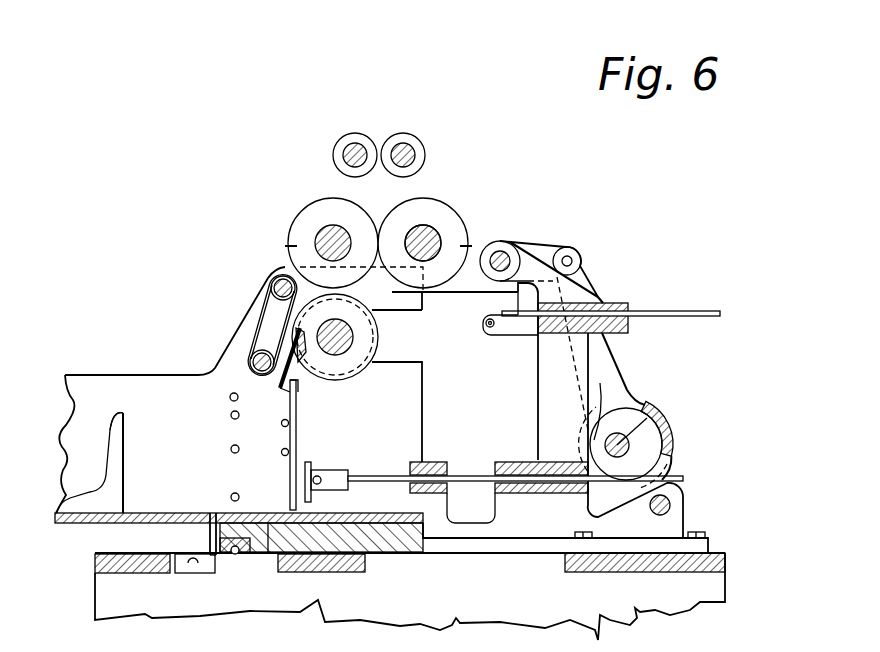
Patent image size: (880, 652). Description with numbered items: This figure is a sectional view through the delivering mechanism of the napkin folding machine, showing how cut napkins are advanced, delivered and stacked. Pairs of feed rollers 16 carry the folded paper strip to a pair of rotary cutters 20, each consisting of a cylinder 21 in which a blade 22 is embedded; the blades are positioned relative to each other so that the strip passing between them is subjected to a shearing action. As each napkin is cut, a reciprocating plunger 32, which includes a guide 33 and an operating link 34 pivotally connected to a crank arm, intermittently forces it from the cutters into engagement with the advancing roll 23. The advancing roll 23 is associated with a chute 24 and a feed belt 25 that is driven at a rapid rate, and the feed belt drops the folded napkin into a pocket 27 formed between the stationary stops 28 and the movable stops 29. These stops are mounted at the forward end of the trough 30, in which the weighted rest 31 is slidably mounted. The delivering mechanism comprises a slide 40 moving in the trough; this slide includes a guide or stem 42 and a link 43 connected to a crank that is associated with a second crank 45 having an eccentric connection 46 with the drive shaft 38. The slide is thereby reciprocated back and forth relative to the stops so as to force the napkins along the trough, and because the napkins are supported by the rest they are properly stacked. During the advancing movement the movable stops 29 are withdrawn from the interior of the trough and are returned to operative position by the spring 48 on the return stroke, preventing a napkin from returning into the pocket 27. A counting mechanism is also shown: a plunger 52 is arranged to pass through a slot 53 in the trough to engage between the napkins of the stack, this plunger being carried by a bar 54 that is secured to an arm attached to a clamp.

The feed rollers 16 is at (352, 150).
The rotary cutters 20 is at (320, 232).
The cylinder 21 is at (443, 223).
The blade 22 is at (478, 242).
The advancing roll 23 is at (368, 338).
The chute 24 is at (298, 392).
The feed belt 25 is at (254, 316).
The pocket 27 is at (281, 452).
The stationary stops 28 is at (300, 456).
The movable stops 29 is at (231, 494).
The trough 30 is at (100, 385).
The weighted rest 31 is at (98, 503).
The plunger 32 is at (463, 295).
The guide 33 is at (680, 312).
The operating link 34 is at (508, 337).
The drive shaft 38 is at (632, 440).
The slide 40 is at (273, 560).
The stem 42 is at (462, 476).
The link 43 is at (340, 476).
The second crank 45 is at (546, 244).
The eccentric connection 46 is at (608, 372).
The spring 48 is at (262, 560).
The plunger 52 is at (213, 556).
The slot 53 is at (215, 512).
The bar 54 is at (210, 557).